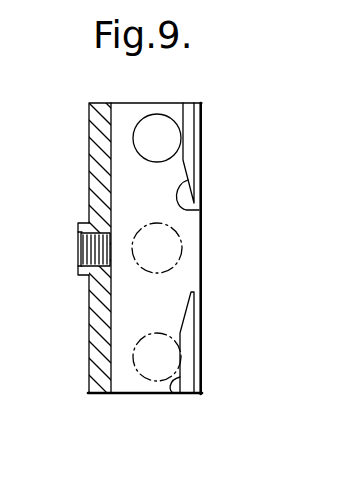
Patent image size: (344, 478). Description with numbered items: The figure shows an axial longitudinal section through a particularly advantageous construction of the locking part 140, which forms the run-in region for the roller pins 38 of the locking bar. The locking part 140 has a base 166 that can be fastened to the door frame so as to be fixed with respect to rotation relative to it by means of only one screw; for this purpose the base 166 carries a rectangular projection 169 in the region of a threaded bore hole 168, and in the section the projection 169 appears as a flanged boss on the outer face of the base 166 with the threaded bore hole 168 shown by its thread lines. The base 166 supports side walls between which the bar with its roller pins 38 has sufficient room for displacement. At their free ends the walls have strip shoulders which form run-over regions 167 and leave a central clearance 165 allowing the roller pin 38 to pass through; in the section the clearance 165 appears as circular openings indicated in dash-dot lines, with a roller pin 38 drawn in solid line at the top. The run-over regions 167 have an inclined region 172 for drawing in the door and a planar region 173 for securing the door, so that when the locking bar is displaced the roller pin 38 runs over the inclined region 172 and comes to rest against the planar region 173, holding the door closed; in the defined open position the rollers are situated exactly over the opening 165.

The roller pin 38 is at (161, 113).
The locking part 140 is at (266, 150).
The inclined region 172 is at (202, 208).
The central clearance 165 is at (190, 247).
The run-over region 167 is at (190, 332).
The planar region 173 is at (161, 396).
The threaded bore hole 168 is at (82, 250).
The rectangular projection 169 is at (86, 270).
The base 166 is at (97, 345).